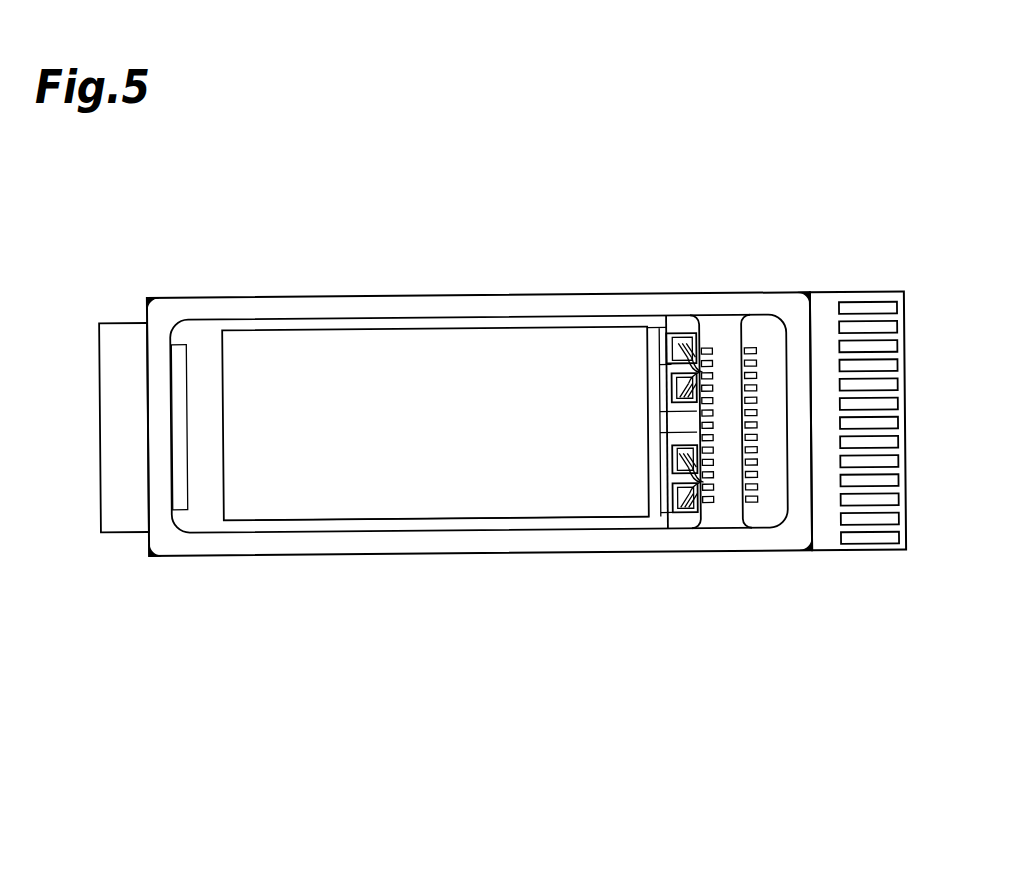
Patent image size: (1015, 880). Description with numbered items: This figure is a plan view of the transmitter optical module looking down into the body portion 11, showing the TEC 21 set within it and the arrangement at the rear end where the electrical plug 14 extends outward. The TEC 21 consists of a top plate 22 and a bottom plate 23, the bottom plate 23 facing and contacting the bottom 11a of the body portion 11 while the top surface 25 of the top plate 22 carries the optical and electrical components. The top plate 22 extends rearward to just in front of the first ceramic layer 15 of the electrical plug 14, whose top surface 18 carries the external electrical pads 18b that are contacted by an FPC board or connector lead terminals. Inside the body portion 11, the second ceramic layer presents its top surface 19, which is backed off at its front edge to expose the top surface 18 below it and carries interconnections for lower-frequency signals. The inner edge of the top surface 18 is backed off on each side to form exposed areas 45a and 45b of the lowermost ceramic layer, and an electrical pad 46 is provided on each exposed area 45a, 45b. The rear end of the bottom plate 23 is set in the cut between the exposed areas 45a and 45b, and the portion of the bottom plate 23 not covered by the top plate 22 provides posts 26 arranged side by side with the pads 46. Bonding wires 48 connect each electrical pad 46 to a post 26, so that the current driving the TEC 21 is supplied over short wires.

The body portion 11 is at (175, 244).
The bottom 11a is at (200, 517).
The electrical plug 14 is at (912, 267).
The first ceramic layer 15 is at (907, 530).
The top surface 18 is at (719, 512).
The electrical pads 18b is at (895, 382).
The top surface 19 is at (762, 512).
The TEC 21 is at (284, 516).
The top plate 22 is at (287, 330).
The bottom plate 23 is at (660, 512).
The top surface 25 is at (395, 352).
The posts 26 is at (683, 457).
The exposed area 45a is at (685, 322).
The exposed area 45b is at (683, 522).
The electrical pads 46 is at (685, 347).
The bonding wires 48 is at (683, 373).